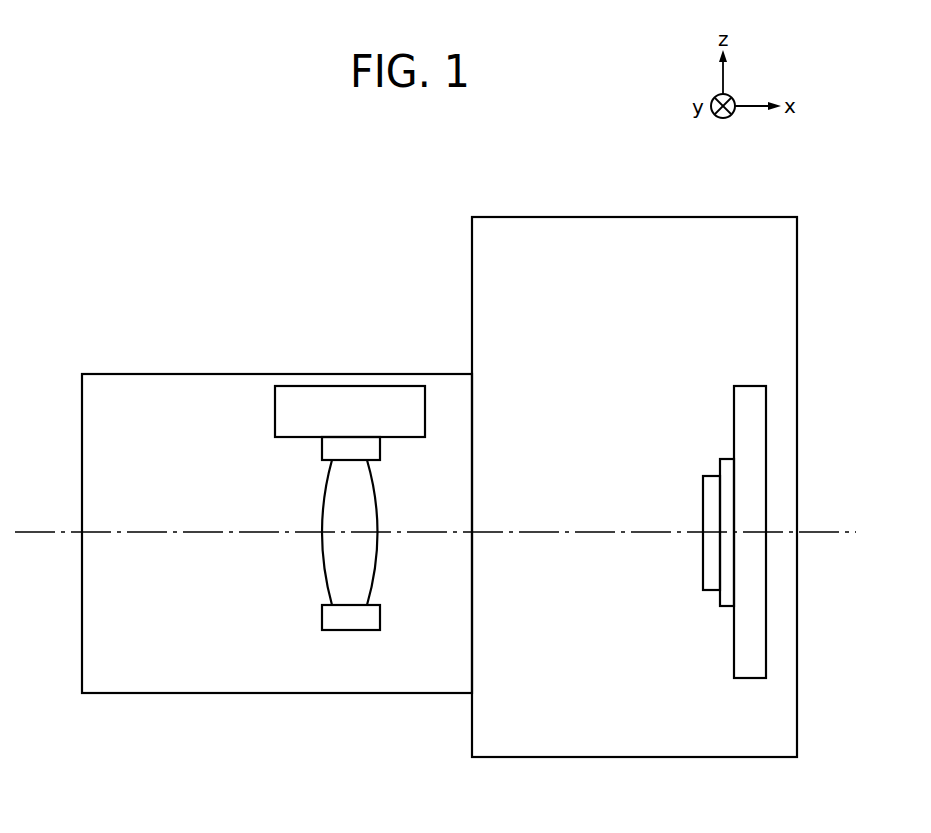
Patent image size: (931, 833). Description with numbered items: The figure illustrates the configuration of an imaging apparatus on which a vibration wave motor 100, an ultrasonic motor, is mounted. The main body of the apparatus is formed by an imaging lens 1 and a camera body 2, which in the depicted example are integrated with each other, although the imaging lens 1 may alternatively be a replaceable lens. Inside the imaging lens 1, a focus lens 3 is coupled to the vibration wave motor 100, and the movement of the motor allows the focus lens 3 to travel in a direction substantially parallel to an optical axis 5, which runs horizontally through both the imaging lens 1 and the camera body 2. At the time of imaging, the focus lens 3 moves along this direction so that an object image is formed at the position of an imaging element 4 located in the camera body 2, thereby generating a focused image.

The imaging lens 1 is at (118, 373).
The camera body 2 is at (518, 216).
The focus lens 3 is at (335, 505).
The imaging element 4 is at (713, 470).
The optical axis 5 is at (42, 528).
The vibration wave motor 100 is at (382, 395).